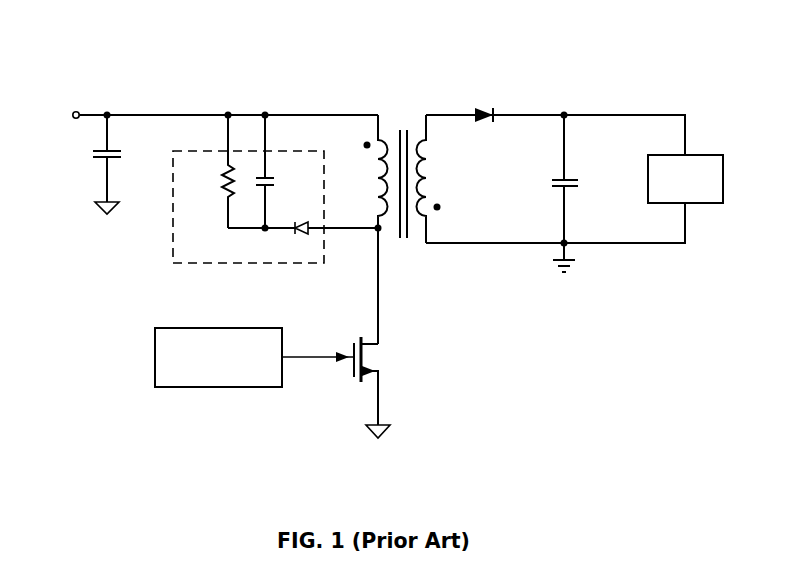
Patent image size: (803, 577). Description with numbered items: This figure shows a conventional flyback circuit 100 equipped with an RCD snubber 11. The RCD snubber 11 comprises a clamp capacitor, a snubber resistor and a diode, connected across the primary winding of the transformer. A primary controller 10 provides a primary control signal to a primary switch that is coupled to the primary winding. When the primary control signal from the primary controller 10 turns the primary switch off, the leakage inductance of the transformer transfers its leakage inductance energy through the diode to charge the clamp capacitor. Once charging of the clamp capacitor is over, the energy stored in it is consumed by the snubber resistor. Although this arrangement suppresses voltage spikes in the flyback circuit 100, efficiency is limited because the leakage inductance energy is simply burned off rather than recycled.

The flyback circuit 100 is at (298, 58).
The RCD snubber 11 is at (173, 263).
The primary controller 10 is at (190, 387).